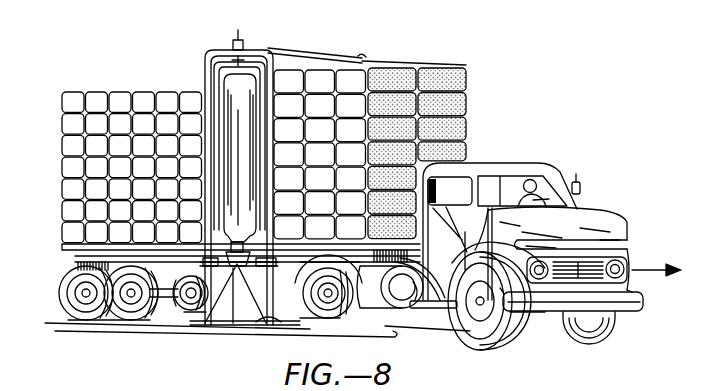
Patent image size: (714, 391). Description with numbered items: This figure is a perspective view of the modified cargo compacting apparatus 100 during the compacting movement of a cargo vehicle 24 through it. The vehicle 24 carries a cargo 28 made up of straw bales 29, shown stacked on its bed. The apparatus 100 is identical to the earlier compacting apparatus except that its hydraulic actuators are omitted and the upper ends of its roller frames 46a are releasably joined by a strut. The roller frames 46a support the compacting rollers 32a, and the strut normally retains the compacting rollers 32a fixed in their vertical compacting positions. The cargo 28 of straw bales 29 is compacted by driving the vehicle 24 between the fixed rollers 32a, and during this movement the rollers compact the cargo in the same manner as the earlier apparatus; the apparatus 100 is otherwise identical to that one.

The modified cargo compacting apparatus 100 is at (262, 46).
The cargo 28 is at (96, 90).
The compacting rollers 32a is at (233, 86).
The straw bales 29 is at (430, 82).
The cargo vehicle 24 is at (559, 164).
The roller frames 46a is at (200, 330).